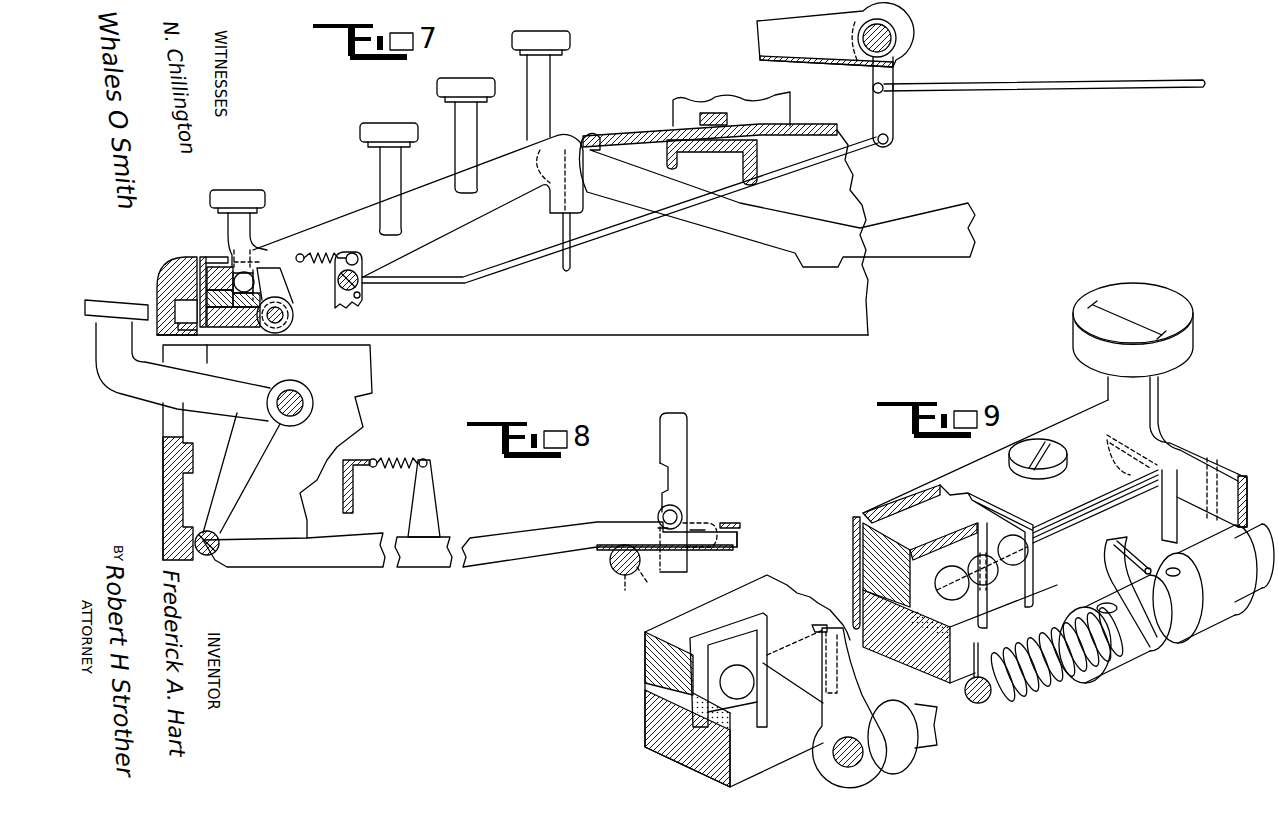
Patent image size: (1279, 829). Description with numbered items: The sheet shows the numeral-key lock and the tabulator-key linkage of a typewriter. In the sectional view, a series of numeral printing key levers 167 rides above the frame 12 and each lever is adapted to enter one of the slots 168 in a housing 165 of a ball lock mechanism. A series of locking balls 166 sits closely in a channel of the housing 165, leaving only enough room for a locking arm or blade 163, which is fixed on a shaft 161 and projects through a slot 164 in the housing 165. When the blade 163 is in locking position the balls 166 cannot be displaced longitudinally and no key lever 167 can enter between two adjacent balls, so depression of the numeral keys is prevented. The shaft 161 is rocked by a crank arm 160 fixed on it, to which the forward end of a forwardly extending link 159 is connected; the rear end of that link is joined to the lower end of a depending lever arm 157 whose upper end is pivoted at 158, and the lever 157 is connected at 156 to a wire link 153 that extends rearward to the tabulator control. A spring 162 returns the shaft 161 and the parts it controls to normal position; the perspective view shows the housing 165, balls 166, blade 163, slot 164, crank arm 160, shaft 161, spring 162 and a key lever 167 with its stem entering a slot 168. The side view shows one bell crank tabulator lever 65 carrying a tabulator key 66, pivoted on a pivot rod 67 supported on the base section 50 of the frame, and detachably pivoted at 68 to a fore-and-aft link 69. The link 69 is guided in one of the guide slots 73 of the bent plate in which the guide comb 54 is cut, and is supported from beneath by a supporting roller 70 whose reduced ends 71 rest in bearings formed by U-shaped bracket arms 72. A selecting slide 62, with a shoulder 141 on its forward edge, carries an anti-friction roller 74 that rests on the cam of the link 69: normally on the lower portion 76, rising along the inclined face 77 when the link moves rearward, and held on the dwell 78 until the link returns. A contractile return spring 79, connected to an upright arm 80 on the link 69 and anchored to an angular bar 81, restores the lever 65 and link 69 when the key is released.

In FIG. 7, the frame 12 is at (512, 232).
In FIG. 8, the base section 50 is at (267, 452).
In FIG. 8, the guide comb 54 is at (740, 527).
In FIG. 8, the slide 62 is at (673, 492).
In FIG. 8, the bell crank tabulator lever 65 is at (241, 473).
In FIG. 8, the tabulator key 66 is at (118, 308).
In FIG. 8, the pivot rod 67 is at (299, 401).
In FIG. 8, the pivot 68 is at (221, 538).
In FIG. 8, the link 69 is at (294, 550).
In FIG. 8, the supporting roller 70 is at (611, 562).
In FIG. 8, the reduced ends 71 is at (628, 590).
In FIG. 8, the U-shaped bracket arms 72 is at (652, 582).
In FIG. 8, the guide slots 73 is at (728, 523).
In FIG. 8, the anti-friction roller 74 is at (679, 507).
In FIG. 8, the lower portion 76 is at (697, 530).
In FIG. 8, the inclined face 77 is at (660, 528).
In FIG. 8, the dwell 78 is at (616, 524).
In FIG. 8, the contractile return spring 79 is at (422, 459).
In FIG. 8, the upright arm 80 is at (423, 513).
In FIG. 8, the angular bar 81 is at (353, 461).
In FIG. 8, the shoulders 141 is at (668, 500).
In FIG. 7, the wire link 153 is at (1052, 80).
In FIG. 9, the wire link 153 is at (1120, 543).
In FIG. 7, the connection 156 is at (894, 75).
In FIG. 7, the depending lever arm 157 is at (884, 117).
In FIG. 7, the pivot 158 is at (893, 38).
In FIG. 7, the forwardly extending link 159 is at (805, 173).
In FIG. 7, the crank arm 160 is at (289, 291).
In FIG. 9, the crank arm 160 is at (1103, 580).
In FIG. 7, the shaft 161 is at (288, 317).
In FIG. 9, the shaft 161 is at (988, 708).
In FIG. 9, the spring 162 is at (1053, 680).
In FIG. 7, the locking arm or blade 163 is at (299, 275).
In FIG. 9, the locking arm or blade 163 is at (985, 662).
In FIG. 9, the slot 164 is at (812, 627).
In FIG. 7, the housing 165 is at (208, 258).
In FIG. 9, the housing 165 is at (901, 593).
In FIG. 7, the locking balls 166 is at (248, 276).
In FIG. 9, the locking balls 166 is at (1013, 567).
In FIG. 7, the numeral printing key levers 167 is at (614, 205).
In FIG. 9, the numeral printing key levers 167 is at (1227, 473).
In FIG. 7, the slots 168 is at (238, 228).
In FIG. 9, the slots 168 is at (973, 515).